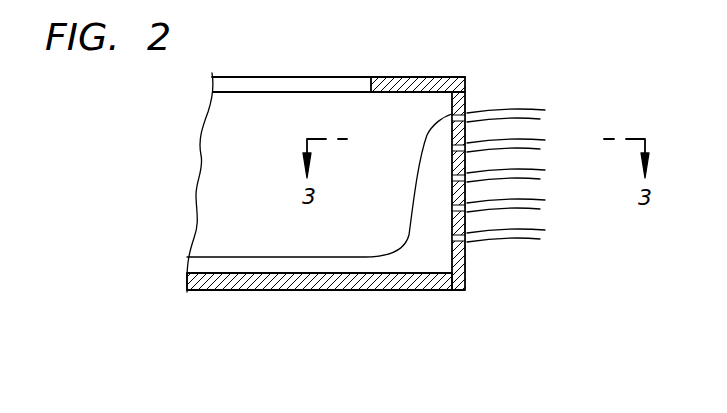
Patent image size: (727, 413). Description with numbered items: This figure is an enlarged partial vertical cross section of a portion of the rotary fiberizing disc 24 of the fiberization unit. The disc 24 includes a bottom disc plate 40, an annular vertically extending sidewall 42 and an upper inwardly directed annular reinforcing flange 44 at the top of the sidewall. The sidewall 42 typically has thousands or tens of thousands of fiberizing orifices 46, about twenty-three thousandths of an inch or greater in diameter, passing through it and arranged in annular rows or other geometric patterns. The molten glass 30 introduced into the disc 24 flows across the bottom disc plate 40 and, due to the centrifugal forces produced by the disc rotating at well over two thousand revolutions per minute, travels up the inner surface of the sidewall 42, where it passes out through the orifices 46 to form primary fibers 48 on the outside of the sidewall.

The rotary fiberizing disc 24 is at (297, 313).
The molten glass 30 is at (283, 262).
The bottom disc plate 40 is at (384, 284).
The annular vertically extending sidewall 42 is at (466, 271).
The upper inwardly directed annular reinforcing flange 44 is at (400, 77).
The fiberizing orifices 46 is at (452, 148).
The primary fibers 48 is at (522, 112).